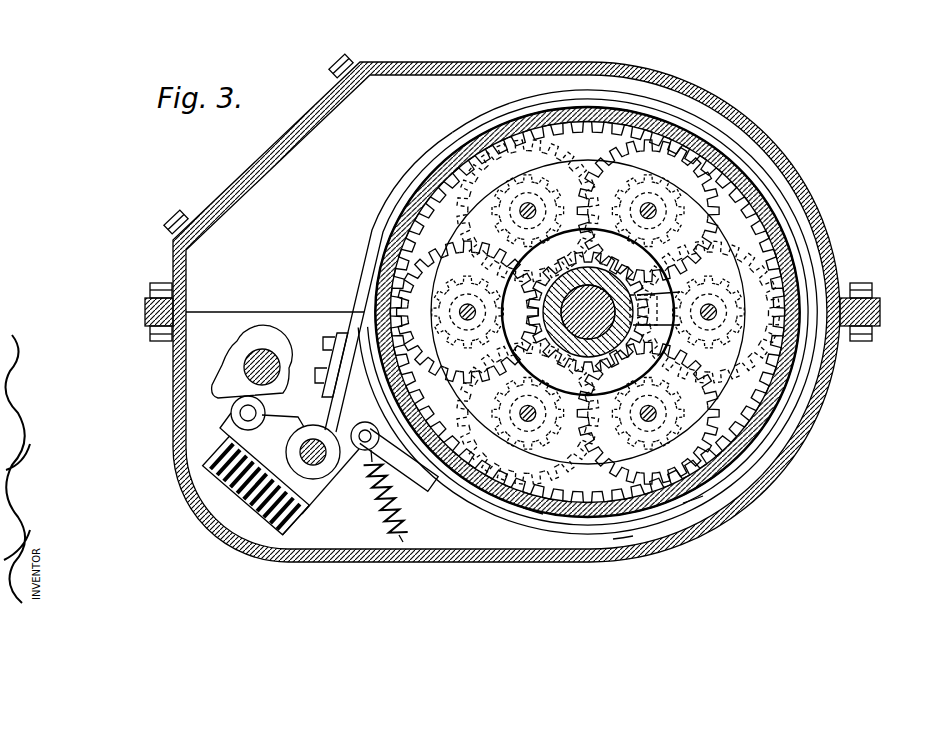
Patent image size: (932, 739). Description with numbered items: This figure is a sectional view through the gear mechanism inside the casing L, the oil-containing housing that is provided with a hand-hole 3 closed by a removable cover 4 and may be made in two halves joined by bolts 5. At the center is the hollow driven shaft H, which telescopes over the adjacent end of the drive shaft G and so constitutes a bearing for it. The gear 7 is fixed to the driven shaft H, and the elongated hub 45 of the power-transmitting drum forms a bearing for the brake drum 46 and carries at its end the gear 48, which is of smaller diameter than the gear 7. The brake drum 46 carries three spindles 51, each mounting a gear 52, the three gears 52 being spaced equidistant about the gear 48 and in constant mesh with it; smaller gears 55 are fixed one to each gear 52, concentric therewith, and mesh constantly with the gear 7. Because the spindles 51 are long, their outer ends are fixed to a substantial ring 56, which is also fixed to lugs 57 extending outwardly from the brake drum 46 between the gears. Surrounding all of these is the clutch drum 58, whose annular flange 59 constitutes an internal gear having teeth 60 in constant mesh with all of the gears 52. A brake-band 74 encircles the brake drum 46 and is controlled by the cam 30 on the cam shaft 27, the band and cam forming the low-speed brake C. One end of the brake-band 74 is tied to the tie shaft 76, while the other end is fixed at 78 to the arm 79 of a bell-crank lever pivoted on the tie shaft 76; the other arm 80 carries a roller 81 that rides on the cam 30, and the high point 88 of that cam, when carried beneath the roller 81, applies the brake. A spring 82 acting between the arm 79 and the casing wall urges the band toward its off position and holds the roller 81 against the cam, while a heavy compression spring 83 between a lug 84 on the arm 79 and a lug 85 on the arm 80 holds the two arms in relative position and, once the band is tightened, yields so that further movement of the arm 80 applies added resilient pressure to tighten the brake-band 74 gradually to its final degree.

The casing L is at (458, 62).
The hand-hole 3 is at (292, 146).
The removable cover 4 is at (219, 192).
The gear 7 is at (800, 393).
The bolts 5 is at (144, 306).
The cam 30 is at (241, 348).
The smaller gears 55 is at (790, 197).
The brake-band 74 is at (745, 162).
The low-speed brake C is at (746, 453).
The gears 52 is at (672, 157).
The clutch drum 58 is at (714, 522).
The annular flange 59 is at (628, 485).
The teeth 60 is at (532, 497).
The gear 48 is at (432, 175).
The ring 56 is at (738, 343).
The hub 45 is at (553, 283).
The driven shaft H is at (755, 333).
The spindles 51 is at (466, 392).
The brake drum 46 is at (504, 167).
The drive shaft G is at (676, 297).
The lugs 57 is at (454, 145).
The tie shaft 76 is at (322, 463).
The high point 88 is at (212, 388).
The cam shaft 27 is at (240, 360).
The roller 81 is at (232, 411).
The arm 80 is at (220, 428).
The lug 85 is at (210, 450).
The heavy compression spring 83 is at (250, 497).
The lug 84 is at (298, 518).
The fixing point 78 is at (366, 429).
The arm 79 is at (367, 455).
The spring 82 is at (383, 524).